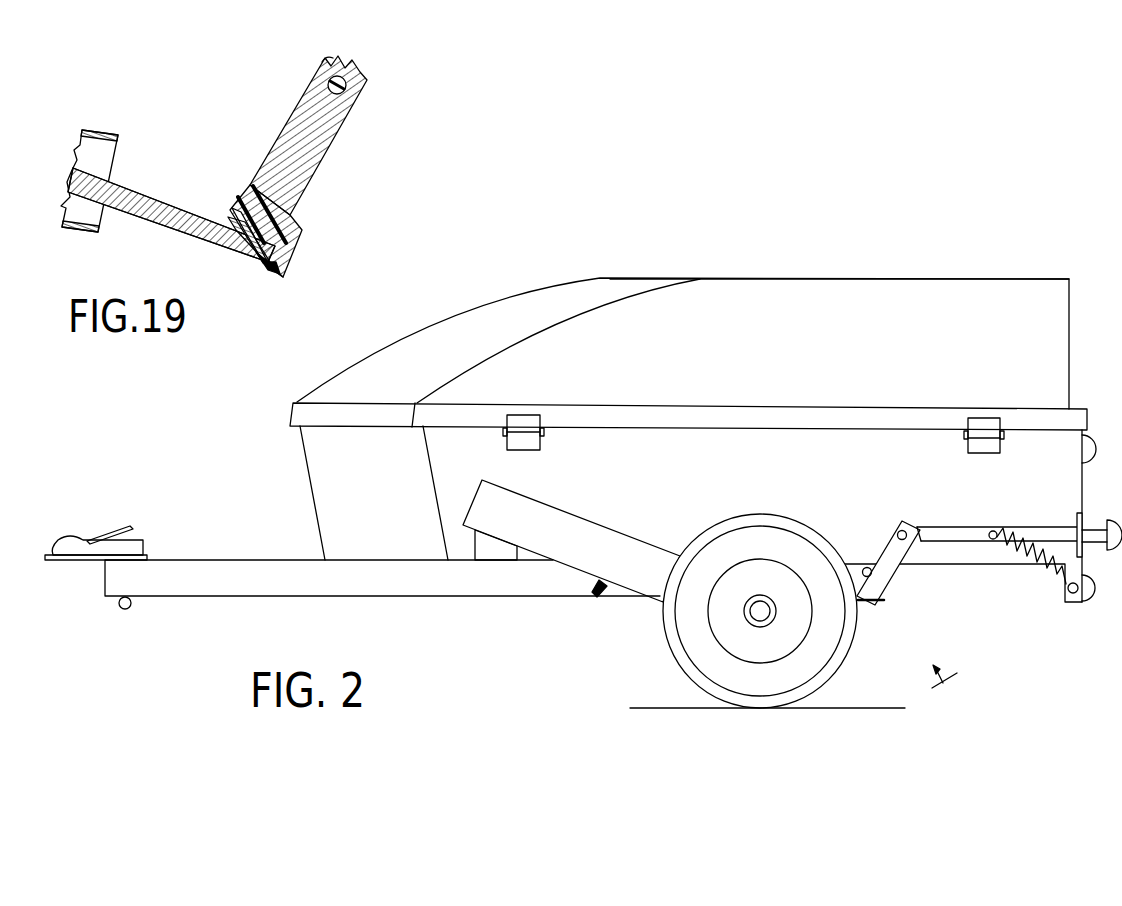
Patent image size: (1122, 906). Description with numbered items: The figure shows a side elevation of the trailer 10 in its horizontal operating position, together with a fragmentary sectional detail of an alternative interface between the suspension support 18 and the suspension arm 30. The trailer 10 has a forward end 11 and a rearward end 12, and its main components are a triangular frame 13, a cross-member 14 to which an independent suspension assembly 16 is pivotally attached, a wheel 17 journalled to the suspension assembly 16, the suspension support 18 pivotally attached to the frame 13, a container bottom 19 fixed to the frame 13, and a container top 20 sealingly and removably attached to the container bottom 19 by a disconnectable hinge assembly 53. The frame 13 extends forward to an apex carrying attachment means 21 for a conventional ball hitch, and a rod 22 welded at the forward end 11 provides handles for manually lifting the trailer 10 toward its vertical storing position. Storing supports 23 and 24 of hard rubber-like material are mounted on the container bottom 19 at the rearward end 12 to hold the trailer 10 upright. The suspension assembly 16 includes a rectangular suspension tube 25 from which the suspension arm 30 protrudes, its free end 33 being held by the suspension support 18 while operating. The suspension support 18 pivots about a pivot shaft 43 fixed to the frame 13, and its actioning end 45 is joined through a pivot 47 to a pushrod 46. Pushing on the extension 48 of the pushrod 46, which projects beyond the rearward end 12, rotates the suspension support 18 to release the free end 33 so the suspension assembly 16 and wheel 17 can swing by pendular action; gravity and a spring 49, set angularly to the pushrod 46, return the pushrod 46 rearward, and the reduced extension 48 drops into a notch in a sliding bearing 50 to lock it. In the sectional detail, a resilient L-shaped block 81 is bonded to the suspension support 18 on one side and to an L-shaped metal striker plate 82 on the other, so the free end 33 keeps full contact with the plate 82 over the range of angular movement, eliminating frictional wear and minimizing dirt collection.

In FIG. 2, the trailer 10 is at (953, 689).
In FIG. 2, the forward end 11 is at (105, 575).
In FIG. 2, the rearward end 12 is at (1082, 477).
In FIG. 2, the triangular frame 13 is at (458, 603).
In FIG. 2, the cross-member 14 is at (493, 553).
In FIG. 2, the suspension assembly 16 is at (594, 598).
In FIG. 2, the wheel 17 is at (660, 632).
In FIG. 19, the suspension support 18 is at (297, 108).
In FIG. 2, the suspension support 18 is at (887, 562).
In FIG. 2, the container bottom 19 is at (628, 475).
In FIG. 2, the container top 20 is at (802, 345).
In FIG. 2, the attachment means 21 is at (67, 540).
In FIG. 2, the rod 22 is at (131, 607).
In FIG. 2, the storing support 23 is at (1097, 600).
In FIG. 2, the storing support 24 is at (1095, 447).
In FIG. 19, the suspension tube 25 is at (113, 129).
In FIG. 2, the suspension tube 25 is at (570, 532).
In FIG. 19, the suspension arm 30 is at (150, 221).
In FIG. 19, the free end 33 is at (257, 257).
In FIG. 19, the pivot shaft 43 is at (327, 57).
In FIG. 2, the pivot shaft 43 is at (862, 567).
In FIG. 2, the actioning end 45 is at (920, 520).
In FIG. 2, the pushrod 46 is at (1025, 535).
In FIG. 2, the pivot 47 is at (901, 530).
In FIG. 2, the extension 48 is at (1112, 520).
In FIG. 2, the spring 49 is at (1027, 570).
In FIG. 2, the sliding bearing 50 is at (1078, 517).
In FIG. 2, the disconnectable hinge assembly 53 is at (541, 437).
In FIG. 19, the resilient L-shaped block 81 is at (231, 208).
In FIG. 19, the L-shaped metal striker plate 82 is at (226, 218).